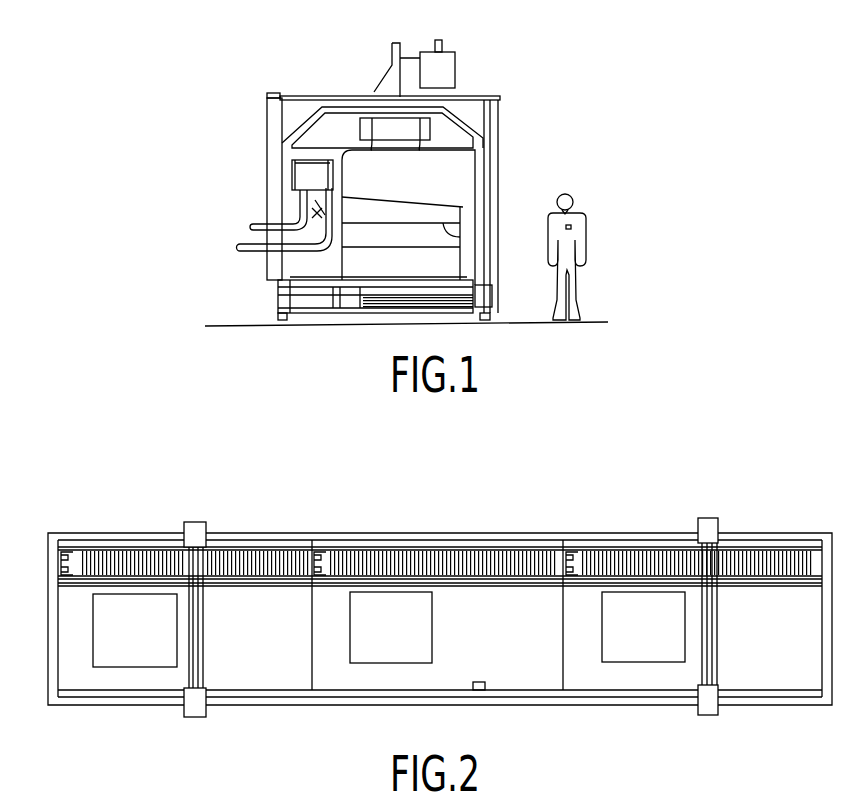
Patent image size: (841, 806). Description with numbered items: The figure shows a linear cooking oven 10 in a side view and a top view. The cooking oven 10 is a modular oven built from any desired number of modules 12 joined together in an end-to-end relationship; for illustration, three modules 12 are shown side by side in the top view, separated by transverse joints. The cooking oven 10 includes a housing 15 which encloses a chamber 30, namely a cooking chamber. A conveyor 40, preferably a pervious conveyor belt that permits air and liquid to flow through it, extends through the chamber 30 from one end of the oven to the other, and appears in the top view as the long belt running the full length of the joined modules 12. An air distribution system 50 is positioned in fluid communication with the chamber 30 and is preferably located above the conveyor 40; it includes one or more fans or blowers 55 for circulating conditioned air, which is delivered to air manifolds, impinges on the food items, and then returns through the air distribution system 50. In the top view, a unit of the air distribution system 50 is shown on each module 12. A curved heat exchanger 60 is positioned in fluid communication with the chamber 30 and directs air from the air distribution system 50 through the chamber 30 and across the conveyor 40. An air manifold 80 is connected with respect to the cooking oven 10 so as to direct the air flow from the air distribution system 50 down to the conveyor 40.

In FIG. 1, the cooking oven 10 is at (300, 64).
In FIG. 2, the cooking oven 10 is at (77, 514).
In FIG. 2, the module 12 is at (242, 526).
In FIG. 1, the housing 15 is at (495, 115).
In FIG. 1, the chamber 30 is at (462, 172).
In FIG. 1, the conveyor 40 is at (445, 228).
In FIG. 1, the air distribution system 50 is at (448, 62).
In FIG. 2, the air distribution system 50 is at (158, 640).
In FIG. 1, the blower 55 is at (383, 127).
In FIG. 1, the curved heat exchanger 60 is at (297, 224).
In FIG. 1, the air manifold 80 is at (380, 202).